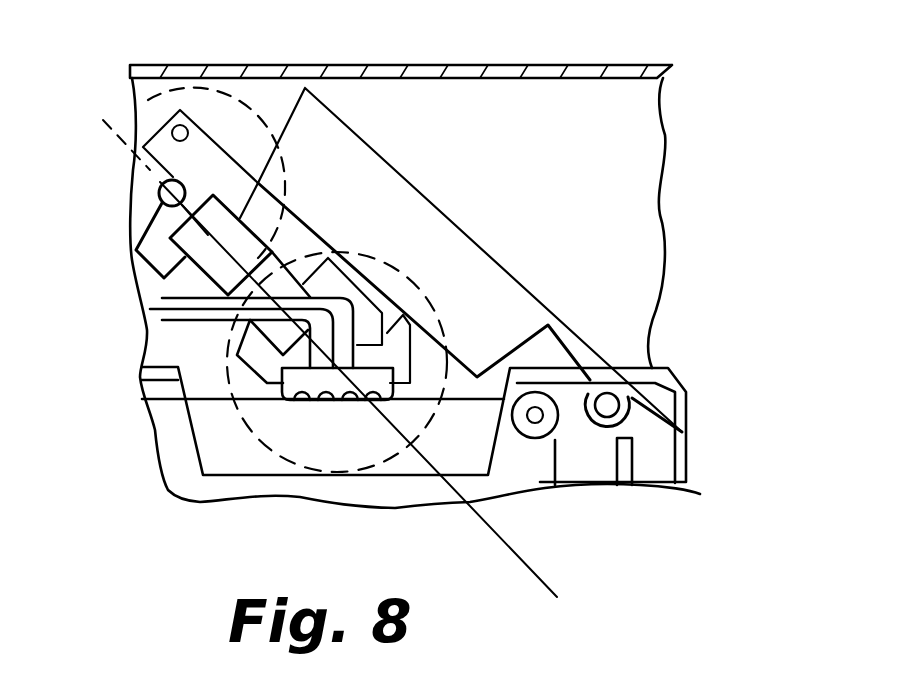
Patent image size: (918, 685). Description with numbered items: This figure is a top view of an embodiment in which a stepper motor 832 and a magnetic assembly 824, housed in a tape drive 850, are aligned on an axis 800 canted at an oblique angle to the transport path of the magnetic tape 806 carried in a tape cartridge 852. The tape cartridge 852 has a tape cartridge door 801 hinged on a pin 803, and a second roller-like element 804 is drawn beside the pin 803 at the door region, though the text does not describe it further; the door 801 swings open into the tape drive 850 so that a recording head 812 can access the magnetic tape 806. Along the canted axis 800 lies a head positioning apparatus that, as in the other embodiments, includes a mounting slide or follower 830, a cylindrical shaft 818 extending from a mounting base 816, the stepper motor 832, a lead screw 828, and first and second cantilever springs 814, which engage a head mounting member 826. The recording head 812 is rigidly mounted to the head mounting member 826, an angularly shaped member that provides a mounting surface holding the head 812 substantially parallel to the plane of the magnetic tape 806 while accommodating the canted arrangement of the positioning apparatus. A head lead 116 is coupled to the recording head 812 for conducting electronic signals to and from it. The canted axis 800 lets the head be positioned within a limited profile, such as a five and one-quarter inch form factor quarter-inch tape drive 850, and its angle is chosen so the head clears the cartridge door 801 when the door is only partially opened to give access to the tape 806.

The head lead 116 is at (183, 320).
The canted axis 800 is at (532, 580).
The tape cartridge door 801 is at (460, 235).
The pin 803 is at (603, 427).
The roller 804 is at (533, 438).
The magnetic tape 806 is at (170, 404).
The recording head 812 is at (320, 398).
The cantilever springs 814 is at (190, 247).
The mounting base 816 is at (457, 100).
The cylindrical shaft 818 is at (171, 130).
The magnetic assembly 824 is at (380, 468).
The head mounting member 826 is at (395, 336).
The lead screw 828 is at (159, 193).
The mounting slide or follower 830 is at (210, 147).
The stepper motor 832 is at (218, 90).
The tape drive 850 is at (650, 122).
The tape cartridge 852 is at (168, 489).